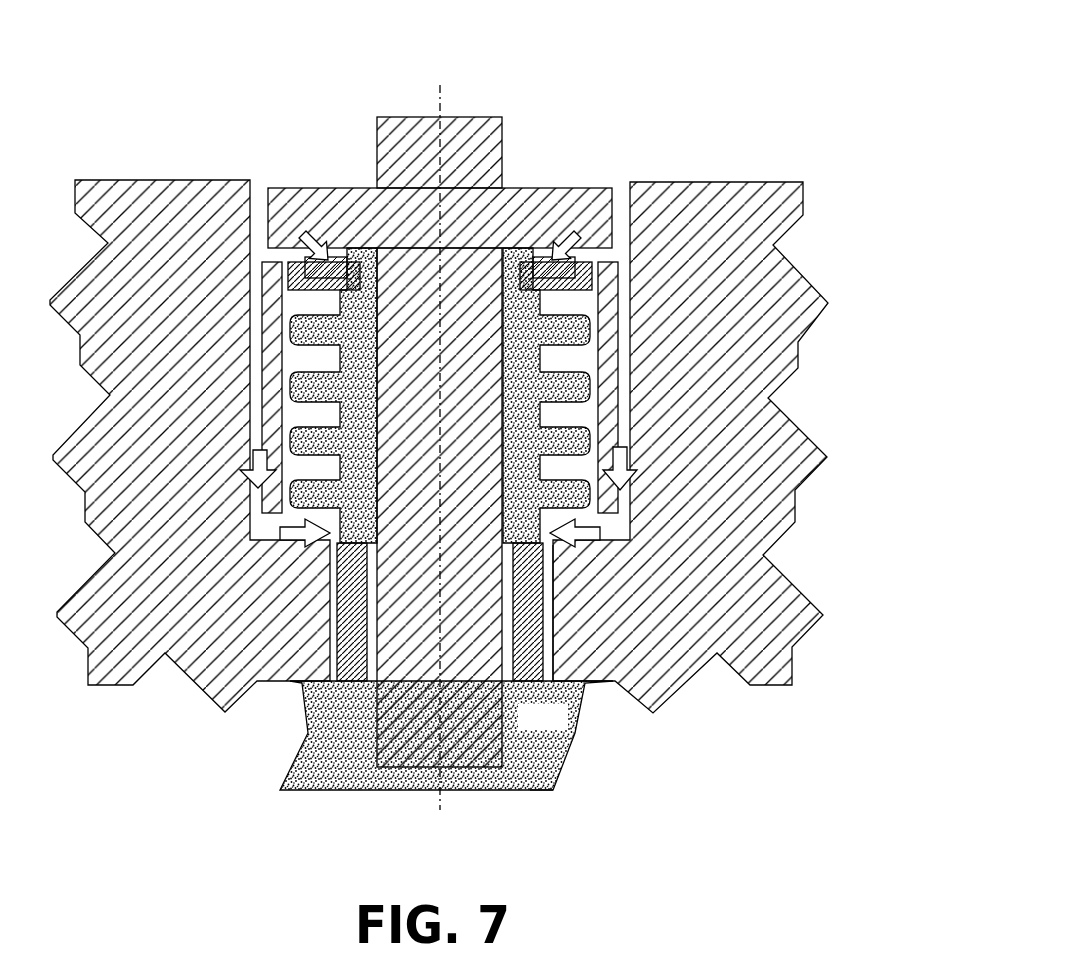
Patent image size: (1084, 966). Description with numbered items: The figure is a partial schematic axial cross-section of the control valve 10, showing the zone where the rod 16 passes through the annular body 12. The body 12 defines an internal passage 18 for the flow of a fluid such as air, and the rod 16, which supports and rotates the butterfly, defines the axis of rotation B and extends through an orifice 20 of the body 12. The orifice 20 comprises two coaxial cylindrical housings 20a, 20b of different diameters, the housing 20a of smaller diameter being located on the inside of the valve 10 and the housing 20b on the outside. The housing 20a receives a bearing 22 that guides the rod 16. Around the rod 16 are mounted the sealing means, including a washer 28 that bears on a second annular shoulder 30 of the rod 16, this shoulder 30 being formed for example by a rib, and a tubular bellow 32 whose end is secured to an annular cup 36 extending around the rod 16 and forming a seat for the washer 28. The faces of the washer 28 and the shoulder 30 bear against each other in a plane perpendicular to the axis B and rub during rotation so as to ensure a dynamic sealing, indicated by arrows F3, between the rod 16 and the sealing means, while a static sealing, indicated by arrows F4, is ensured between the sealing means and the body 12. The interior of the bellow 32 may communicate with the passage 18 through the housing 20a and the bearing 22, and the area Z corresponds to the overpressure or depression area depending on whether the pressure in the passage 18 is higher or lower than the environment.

The control valve 10 is at (696, 52).
The annular body 12 is at (798, 346).
The rod 16 is at (490, 116).
The internal passage 18 is at (446, 735).
The orifice 20 is at (690, 453).
The cylindrical housing 20a is at (556, 615).
The cylindrical housing 20b is at (630, 218).
The bearing 22 is at (290, 683).
The washer 28 is at (325, 297).
The second annular shoulder 30 is at (520, 190).
The tubular bellow 32 is at (567, 372).
The annular cup 36 is at (545, 292).
The axis of rotation B is at (446, 96).
The area Z is at (556, 791).
The dynamic sealing arrows F3 is at (305, 245).
The static sealing arrows F4 is at (270, 533).